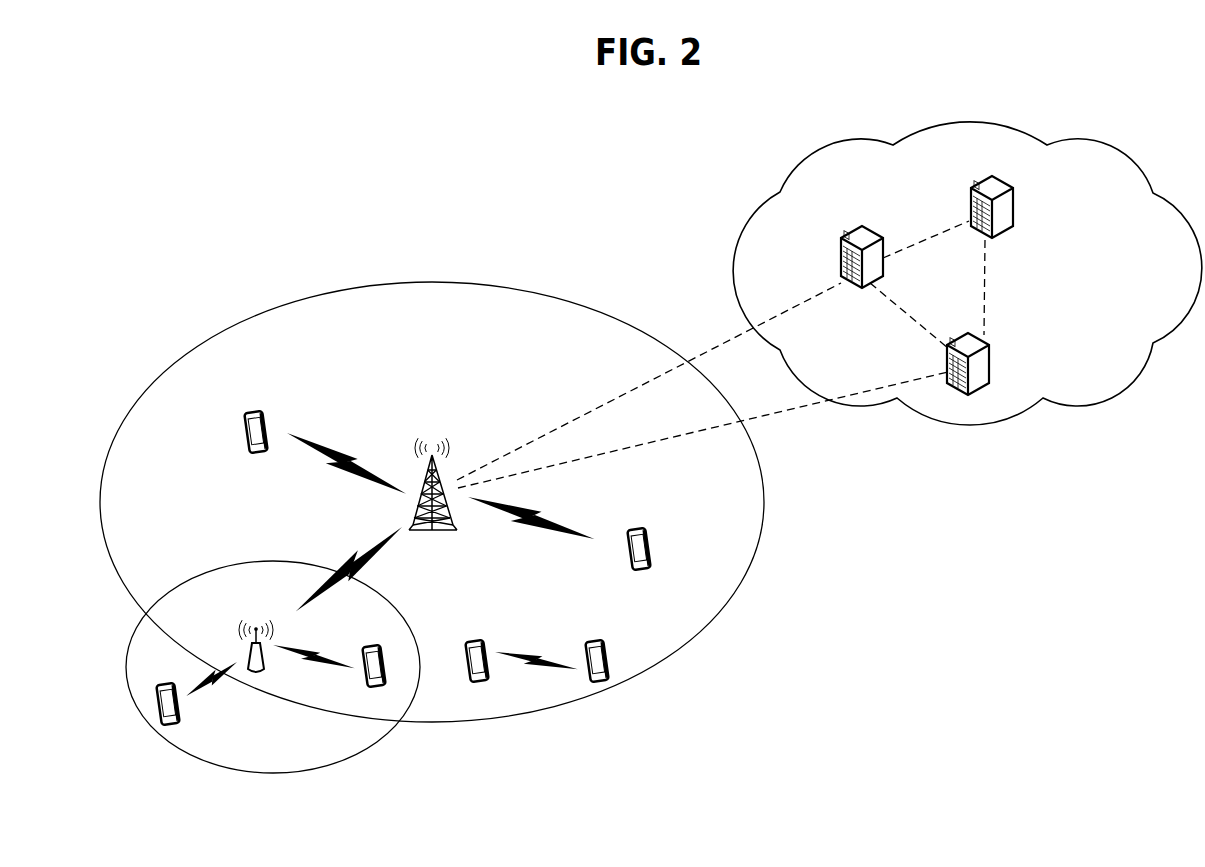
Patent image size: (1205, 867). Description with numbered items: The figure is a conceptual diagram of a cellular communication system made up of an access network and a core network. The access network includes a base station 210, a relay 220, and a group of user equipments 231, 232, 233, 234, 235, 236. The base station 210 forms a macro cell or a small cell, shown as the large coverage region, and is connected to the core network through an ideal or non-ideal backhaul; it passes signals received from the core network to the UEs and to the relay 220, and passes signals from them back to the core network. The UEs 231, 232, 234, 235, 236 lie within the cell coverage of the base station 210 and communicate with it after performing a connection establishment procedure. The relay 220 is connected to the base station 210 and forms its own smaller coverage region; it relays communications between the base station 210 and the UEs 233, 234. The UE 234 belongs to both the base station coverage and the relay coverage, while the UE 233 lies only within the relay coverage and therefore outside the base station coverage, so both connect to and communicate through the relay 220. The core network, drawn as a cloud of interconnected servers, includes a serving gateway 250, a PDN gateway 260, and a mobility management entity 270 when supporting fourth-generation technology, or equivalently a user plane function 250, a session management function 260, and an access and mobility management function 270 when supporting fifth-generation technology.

The base station 210 is at (432, 448).
The relay 220 is at (256, 626).
The user equipment 231 is at (254, 410).
The user equipment 232 is at (638, 528).
The user equipment 233 is at (170, 726).
The user equipment 234 is at (375, 690).
The user equipment 235 is at (477, 640).
The user equipment 236 is at (596, 640).
The serving gateway 250 is at (850, 236).
The packet data network gateway 260 is at (1014, 203).
The mobility management entity 270 is at (991, 360).